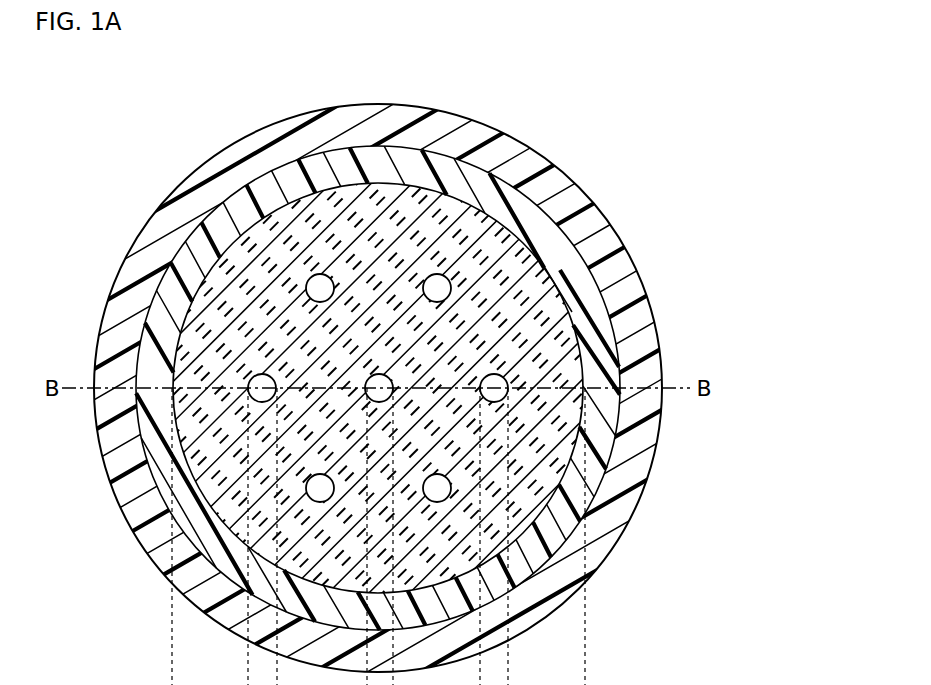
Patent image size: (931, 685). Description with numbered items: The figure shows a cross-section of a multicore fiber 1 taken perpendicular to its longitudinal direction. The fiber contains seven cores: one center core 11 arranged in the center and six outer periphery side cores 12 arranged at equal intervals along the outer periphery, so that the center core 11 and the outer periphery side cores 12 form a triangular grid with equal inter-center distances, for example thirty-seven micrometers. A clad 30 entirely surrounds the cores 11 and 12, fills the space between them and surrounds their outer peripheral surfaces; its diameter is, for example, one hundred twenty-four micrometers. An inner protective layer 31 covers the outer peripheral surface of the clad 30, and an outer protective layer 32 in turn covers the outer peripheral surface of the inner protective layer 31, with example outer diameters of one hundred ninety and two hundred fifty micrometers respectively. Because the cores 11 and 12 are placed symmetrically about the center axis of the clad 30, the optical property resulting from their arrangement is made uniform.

The multicore fiber 1 is at (659, 99).
The center core 11 is at (378, 376).
The outer periphery side cores 12 is at (268, 221).
The clad 30 is at (465, 207).
The inner protective layer 31 is at (597, 343).
The outer protective layer 32 is at (610, 270).